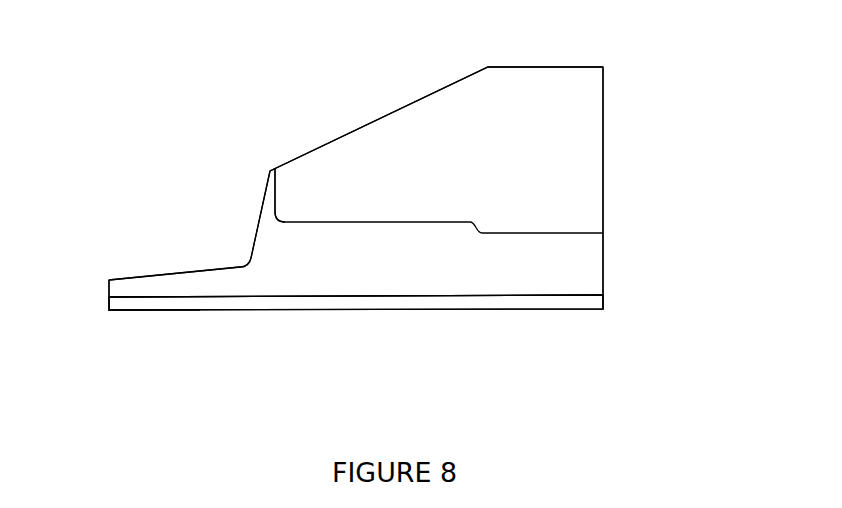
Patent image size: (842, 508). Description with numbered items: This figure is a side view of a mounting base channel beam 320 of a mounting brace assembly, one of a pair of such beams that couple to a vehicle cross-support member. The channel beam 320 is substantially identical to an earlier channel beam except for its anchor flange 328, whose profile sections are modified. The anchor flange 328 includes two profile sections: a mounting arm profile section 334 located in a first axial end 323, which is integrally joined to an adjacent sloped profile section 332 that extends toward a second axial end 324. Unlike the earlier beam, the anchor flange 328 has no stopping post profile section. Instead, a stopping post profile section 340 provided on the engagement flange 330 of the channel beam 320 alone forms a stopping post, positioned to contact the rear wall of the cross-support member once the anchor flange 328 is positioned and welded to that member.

The mounting base channel beam 320 is at (280, 93).
The sloped profile section 332 is at (570, 103).
The anchor flange 328 is at (630, 162).
The second axial end 324 is at (572, 276).
The first axial end 323 is at (150, 287).
The engagement flange 330 is at (365, 262).
The mounting arm profile section 334 is at (197, 268).
The stopping post profile section 340 is at (268, 226).